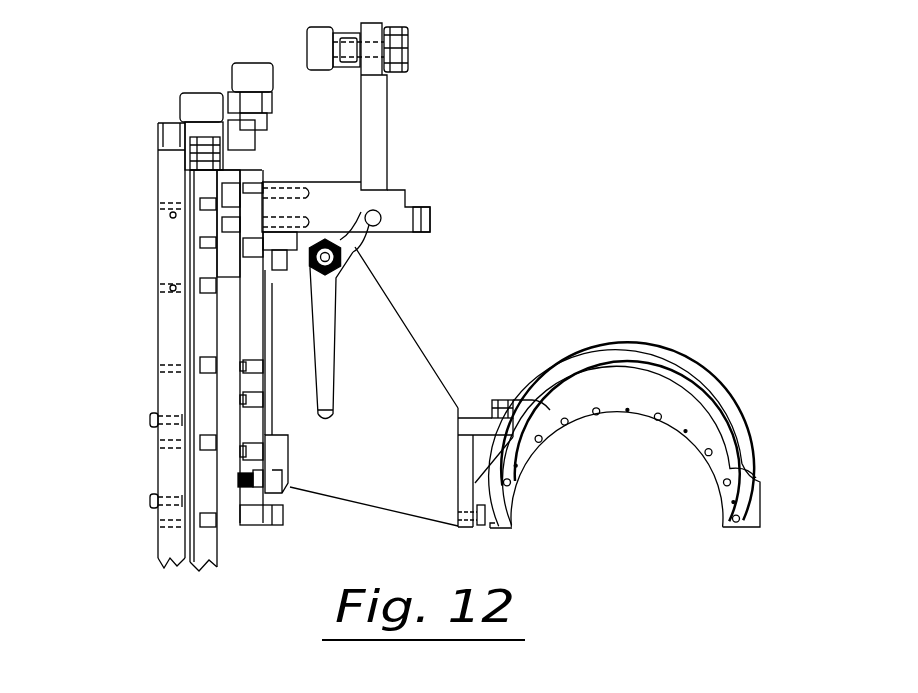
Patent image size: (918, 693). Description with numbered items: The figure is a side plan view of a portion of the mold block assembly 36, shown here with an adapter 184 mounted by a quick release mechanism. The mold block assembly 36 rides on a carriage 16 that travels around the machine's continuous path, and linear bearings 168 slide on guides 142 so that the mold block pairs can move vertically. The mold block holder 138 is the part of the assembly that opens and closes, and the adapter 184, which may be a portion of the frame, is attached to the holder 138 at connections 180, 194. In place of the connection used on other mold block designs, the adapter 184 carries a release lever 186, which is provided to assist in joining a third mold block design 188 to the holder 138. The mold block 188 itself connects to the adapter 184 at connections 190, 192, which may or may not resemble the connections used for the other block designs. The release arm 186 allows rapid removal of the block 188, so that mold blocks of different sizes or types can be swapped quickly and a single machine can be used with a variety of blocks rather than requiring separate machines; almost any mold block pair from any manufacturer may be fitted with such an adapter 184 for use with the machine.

The carriage 16 is at (165, 402).
The mold block assembly 36 is at (432, 121).
The mold block holder 138 is at (243, 323).
The guide 142 is at (220, 553).
The linear bearing 168 is at (195, 234).
The connection 180 is at (288, 487).
The adapter 184 is at (410, 436).
The release lever 186 is at (356, 248).
The mold block 188 is at (677, 410).
The connection 190 is at (508, 402).
The connection 192 is at (480, 525).
The connection 194 is at (383, 207).